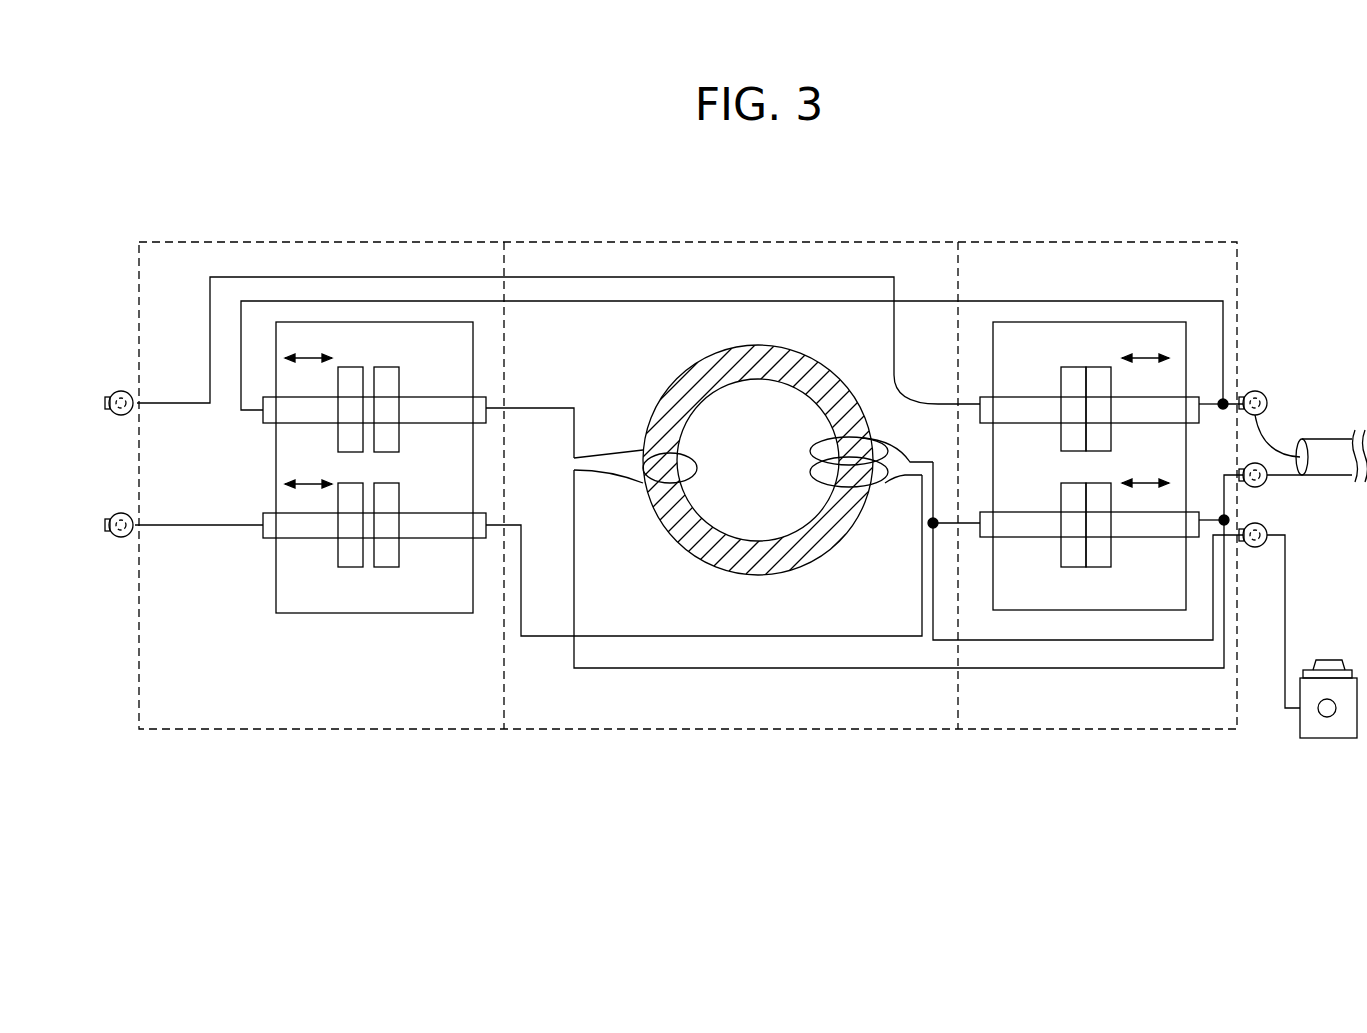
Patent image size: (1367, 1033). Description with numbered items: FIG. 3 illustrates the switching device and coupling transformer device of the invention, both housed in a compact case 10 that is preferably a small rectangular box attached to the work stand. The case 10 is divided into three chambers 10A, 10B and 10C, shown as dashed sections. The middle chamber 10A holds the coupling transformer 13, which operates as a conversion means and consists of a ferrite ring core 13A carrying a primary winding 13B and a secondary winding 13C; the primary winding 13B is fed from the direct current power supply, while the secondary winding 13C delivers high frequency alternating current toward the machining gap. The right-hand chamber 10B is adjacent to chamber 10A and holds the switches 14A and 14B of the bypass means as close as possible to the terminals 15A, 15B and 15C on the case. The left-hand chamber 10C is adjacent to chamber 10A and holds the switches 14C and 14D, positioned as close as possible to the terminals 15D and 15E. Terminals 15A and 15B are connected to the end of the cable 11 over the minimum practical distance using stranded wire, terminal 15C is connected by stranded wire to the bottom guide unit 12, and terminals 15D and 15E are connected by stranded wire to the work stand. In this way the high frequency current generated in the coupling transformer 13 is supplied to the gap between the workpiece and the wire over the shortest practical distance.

The case 10 is at (775, 731).
The chamber 10A is at (727, 260).
The chamber 10B is at (1089, 483).
The chamber 10C is at (374, 430).
The cable 11 is at (1327, 443).
The bottom guide unit 12 is at (1332, 732).
The coupling transformer 13 is at (750, 465).
The ferrite ring core 13A is at (693, 540).
The primary winding 13B is at (607, 452).
The secondary winding 13C is at (883, 490).
The switch 14A is at (1083, 367).
The switch 14B is at (1087, 568).
The switch 14C is at (368, 367).
The switch 14D is at (368, 567).
The terminal 15A is at (1253, 389).
The terminal 15B is at (1258, 489).
The terminal 15C is at (1268, 531).
The terminal 15D is at (112, 515).
The terminal 15E is at (112, 393).